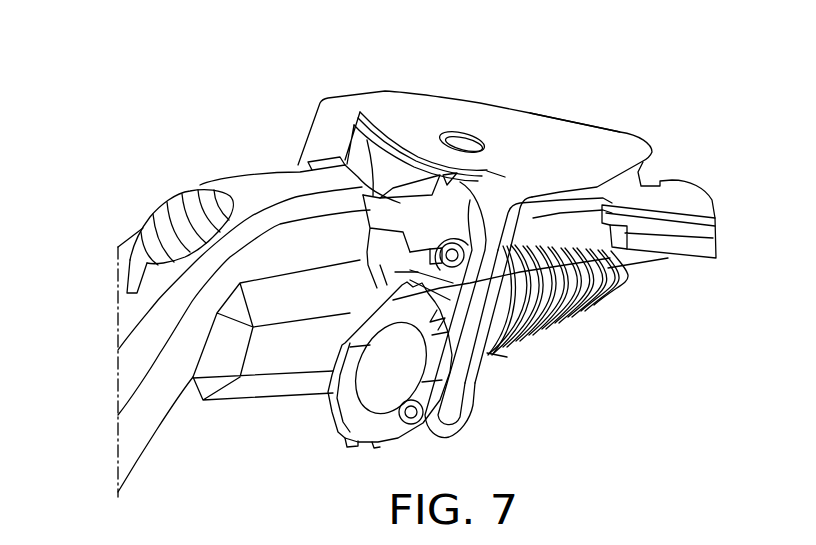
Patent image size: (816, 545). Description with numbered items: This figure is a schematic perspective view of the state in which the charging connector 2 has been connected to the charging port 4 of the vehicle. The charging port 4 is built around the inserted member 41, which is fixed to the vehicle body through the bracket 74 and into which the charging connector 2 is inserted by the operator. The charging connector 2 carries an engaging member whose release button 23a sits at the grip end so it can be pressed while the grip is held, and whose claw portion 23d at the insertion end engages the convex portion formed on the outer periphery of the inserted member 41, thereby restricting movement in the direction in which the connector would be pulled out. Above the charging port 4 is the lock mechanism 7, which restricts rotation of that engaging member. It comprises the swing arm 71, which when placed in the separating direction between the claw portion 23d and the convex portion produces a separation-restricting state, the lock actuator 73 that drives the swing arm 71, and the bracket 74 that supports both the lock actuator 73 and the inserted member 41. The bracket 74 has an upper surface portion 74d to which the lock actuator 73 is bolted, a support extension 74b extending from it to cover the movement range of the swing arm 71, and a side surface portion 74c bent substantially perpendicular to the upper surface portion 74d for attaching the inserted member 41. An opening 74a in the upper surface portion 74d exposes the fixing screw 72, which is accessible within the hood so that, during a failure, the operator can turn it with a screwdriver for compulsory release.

The charging connector 2 is at (153, 438).
The charging port 4 is at (412, 236).
The lock mechanism 7 is at (518, 232).
The release button 23a is at (165, 218).
The claw portion 23d is at (345, 116).
The inserted member 41 is at (555, 330).
The swing arm 71 is at (392, 165).
The fixing screw 72 is at (458, 133).
The lock actuator 73 is at (690, 180).
The bracket 74 is at (518, 232).
The opening 74a is at (476, 132).
The support extension 74b is at (382, 185).
The side surface portion 74c is at (593, 280).
The upper surface portion 74d is at (559, 132).